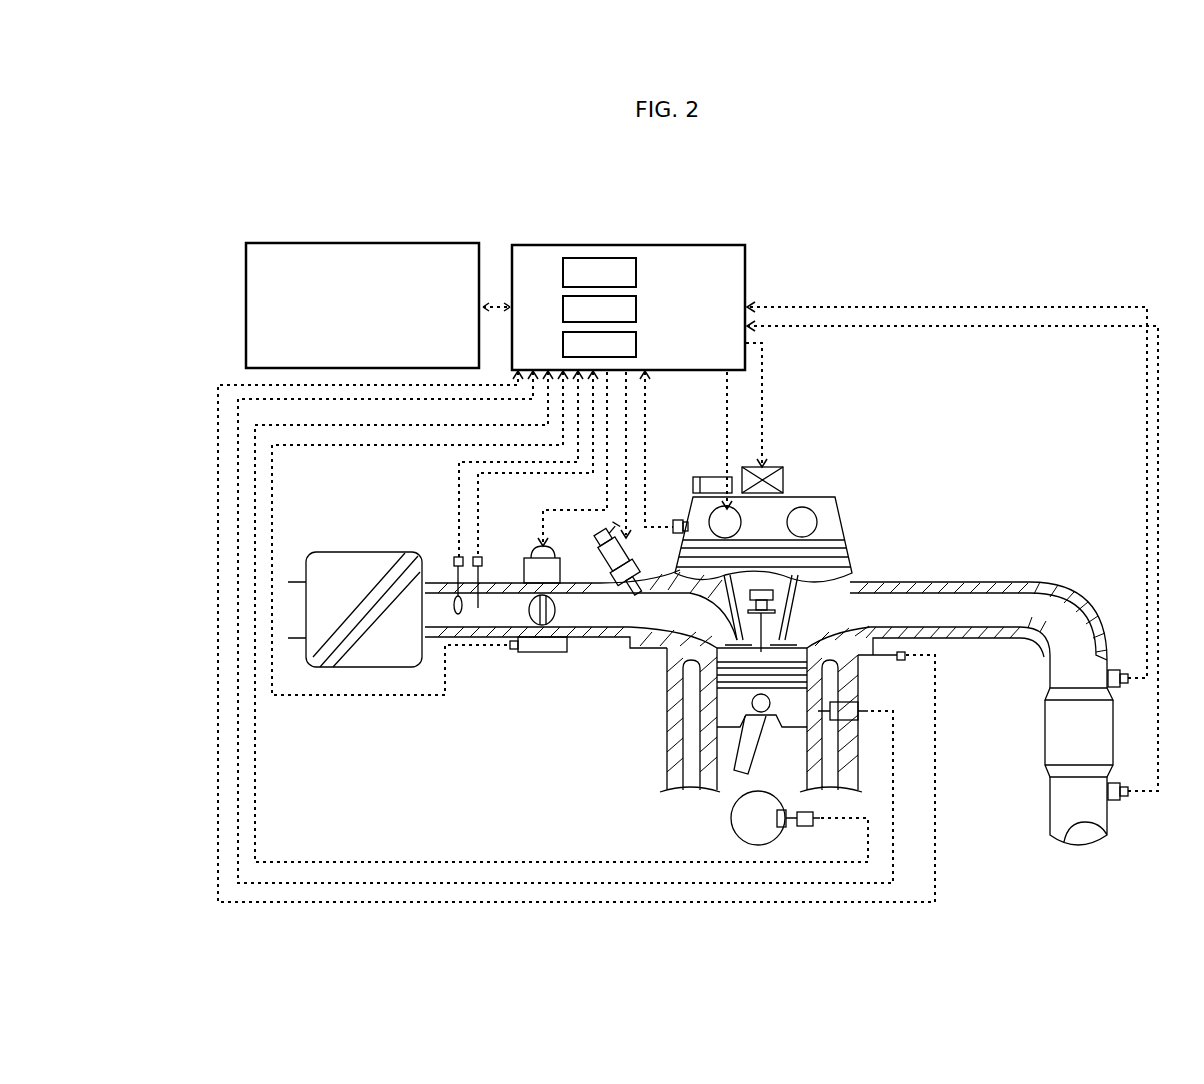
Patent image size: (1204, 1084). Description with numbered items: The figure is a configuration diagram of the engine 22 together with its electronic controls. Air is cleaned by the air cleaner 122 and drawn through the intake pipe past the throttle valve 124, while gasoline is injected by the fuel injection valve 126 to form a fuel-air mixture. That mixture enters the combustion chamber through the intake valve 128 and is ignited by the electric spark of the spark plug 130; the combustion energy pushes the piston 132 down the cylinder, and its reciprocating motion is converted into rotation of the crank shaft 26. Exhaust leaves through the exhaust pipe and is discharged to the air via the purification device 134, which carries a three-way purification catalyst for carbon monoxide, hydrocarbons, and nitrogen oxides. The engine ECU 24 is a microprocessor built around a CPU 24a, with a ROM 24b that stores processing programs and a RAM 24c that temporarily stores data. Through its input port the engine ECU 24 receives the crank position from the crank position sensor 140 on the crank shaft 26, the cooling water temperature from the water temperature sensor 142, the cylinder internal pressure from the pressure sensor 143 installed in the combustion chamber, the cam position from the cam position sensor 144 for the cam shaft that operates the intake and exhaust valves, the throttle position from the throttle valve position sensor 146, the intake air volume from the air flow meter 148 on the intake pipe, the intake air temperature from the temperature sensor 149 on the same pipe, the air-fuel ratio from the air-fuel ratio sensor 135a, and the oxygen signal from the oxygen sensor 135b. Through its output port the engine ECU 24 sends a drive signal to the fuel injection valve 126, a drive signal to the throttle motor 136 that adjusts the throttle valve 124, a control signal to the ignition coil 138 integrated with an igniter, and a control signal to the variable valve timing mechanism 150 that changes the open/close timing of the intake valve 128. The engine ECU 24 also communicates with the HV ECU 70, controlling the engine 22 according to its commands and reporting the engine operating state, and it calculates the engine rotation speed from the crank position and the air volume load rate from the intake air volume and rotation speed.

The engine 22 is at (807, 438).
The engine ECU 24 is at (628, 286).
The CPU 24a is at (636, 273).
The ROM 24b is at (636, 309).
The RAM 24c is at (636, 345).
The crank shaft 26 is at (731, 818).
The HV ECU 70 is at (365, 243).
The air cleaner 122 is at (362, 552).
The throttle valve 124 is at (563, 586).
The fuel injection valve 126 is at (607, 592).
The intake valve 128 is at (728, 630).
The spark plug 130 is at (800, 630).
The piston 132 is at (730, 700).
The purification device 134 is at (1052, 720).
The air-fuel ratio sensor 135a is at (1118, 670).
The oxygen sensor 135b is at (1116, 800).
The throttle motor 136 is at (531, 546).
The ignition coil 138 is at (783, 482).
The crank position sensor 140 is at (800, 827).
The water temperature sensor 142 is at (857, 703).
The pressure sensor 143 is at (905, 651).
The cam position sensor 144 is at (676, 520).
The throttle valve position sensor 146 is at (540, 653).
The air flow meter 148 is at (456, 557).
The temperature sensor 149 is at (480, 557).
The variable valve timing mechanism 150 is at (850, 530).